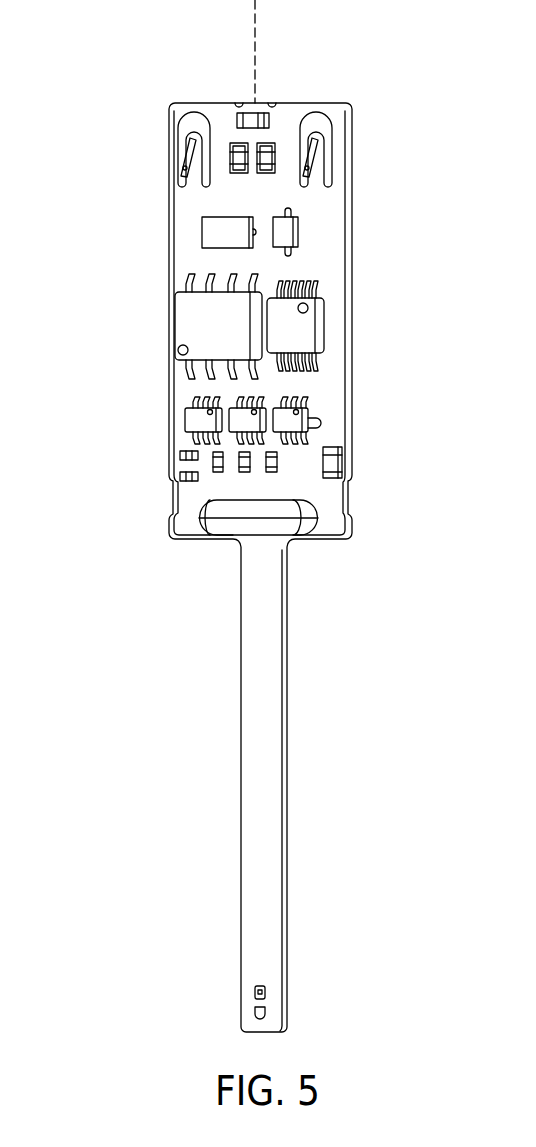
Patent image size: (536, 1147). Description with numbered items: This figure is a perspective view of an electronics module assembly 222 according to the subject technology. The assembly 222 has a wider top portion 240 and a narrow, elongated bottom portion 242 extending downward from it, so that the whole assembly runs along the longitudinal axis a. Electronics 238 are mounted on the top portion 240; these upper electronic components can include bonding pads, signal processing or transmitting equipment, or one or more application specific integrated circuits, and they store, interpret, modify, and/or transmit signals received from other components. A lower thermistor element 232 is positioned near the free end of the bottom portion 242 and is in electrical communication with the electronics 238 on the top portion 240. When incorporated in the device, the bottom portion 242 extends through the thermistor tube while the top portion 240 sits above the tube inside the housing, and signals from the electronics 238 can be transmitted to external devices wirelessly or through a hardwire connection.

The electronics module assembly 222 is at (245, 559).
The top portion 240 is at (340, 111).
The electronics 238 is at (288, 232).
The bottom portion 242 is at (268, 792).
The lower thermistor element 232 is at (263, 992).
The longitudinal axis a is at (258, 17).